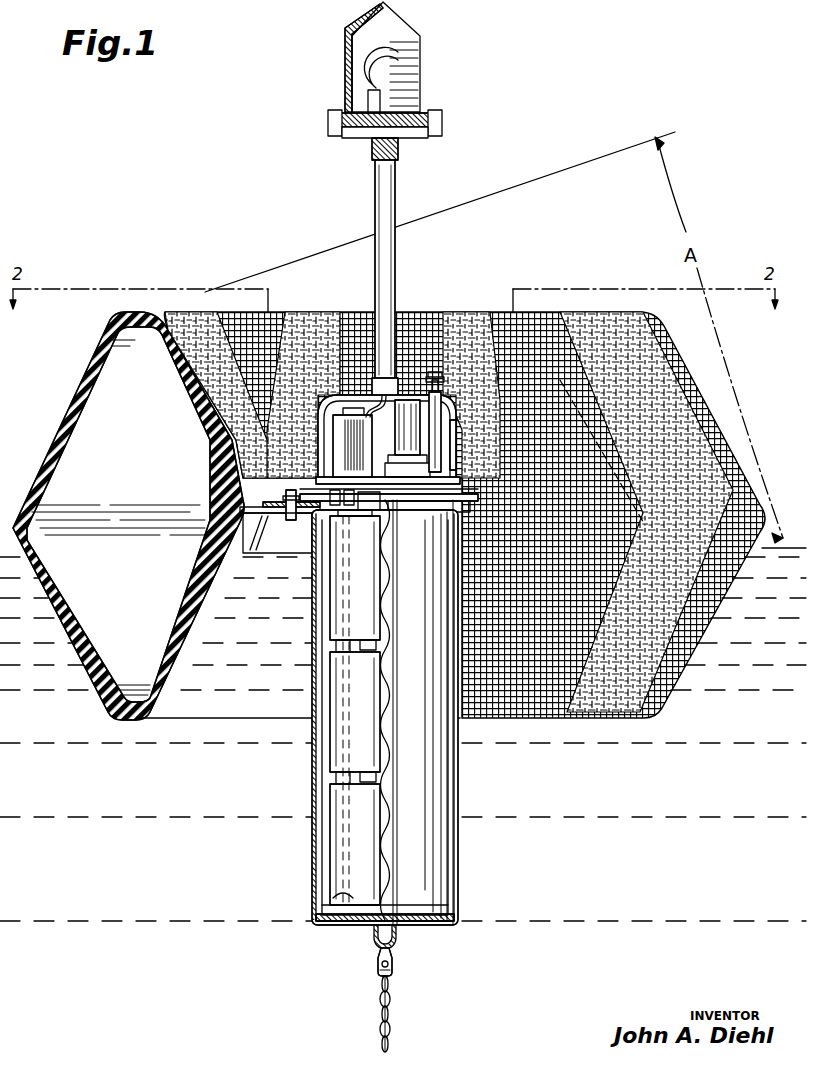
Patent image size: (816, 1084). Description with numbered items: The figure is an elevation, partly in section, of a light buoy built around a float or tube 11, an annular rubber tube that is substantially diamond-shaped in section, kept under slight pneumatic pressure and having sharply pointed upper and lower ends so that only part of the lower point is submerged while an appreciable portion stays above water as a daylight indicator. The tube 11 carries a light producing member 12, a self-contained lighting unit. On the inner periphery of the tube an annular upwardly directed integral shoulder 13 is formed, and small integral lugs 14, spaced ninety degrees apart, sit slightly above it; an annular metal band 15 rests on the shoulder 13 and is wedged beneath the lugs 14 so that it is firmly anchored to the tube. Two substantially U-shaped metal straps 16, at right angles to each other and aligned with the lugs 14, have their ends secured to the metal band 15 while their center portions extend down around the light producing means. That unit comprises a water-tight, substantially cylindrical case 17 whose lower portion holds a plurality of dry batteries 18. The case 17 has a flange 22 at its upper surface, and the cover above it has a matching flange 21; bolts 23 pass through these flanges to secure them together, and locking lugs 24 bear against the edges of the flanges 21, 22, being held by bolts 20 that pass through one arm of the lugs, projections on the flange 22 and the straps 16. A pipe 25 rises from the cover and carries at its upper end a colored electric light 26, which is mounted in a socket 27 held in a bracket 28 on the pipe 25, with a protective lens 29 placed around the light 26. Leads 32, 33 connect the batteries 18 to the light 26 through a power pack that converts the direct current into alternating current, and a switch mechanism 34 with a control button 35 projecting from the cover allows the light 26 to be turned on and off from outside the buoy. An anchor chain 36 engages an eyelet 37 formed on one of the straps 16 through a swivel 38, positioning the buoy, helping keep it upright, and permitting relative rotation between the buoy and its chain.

The float or tube 11 is at (88, 366).
The light producing member 12 is at (396, 180).
The annular upwardly directed integral shoulder 13 is at (264, 505).
The integral lugs 14 is at (286, 494).
The annular metal band 15 is at (266, 513).
The U-shaped metal straps 16 is at (318, 928).
The case 17 is at (316, 850).
The dry batteries 18 is at (322, 674).
The bolts 20 is at (318, 462).
The flange 21 is at (332, 446).
The flange 22 is at (316, 512).
The bolts 23 is at (404, 504).
The locking lugs 24 is at (268, 442).
The pipe 25 is at (396, 290).
The light 26 is at (380, 72).
The socket 27 is at (366, 100).
The bracket 28 is at (358, 138).
The protective lens 29 is at (346, 60).
The lead 32 is at (430, 378).
The lead 33 is at (378, 392).
The switch mechanism 34 is at (460, 428).
The control button 35 is at (439, 374).
The anchor chain 36 is at (391, 1024).
The eyelet 37 is at (400, 940).
The swivel 38 is at (395, 968).